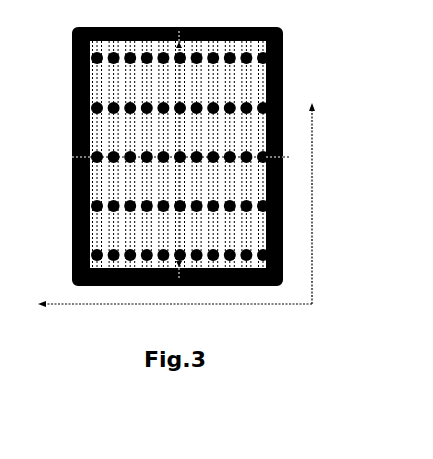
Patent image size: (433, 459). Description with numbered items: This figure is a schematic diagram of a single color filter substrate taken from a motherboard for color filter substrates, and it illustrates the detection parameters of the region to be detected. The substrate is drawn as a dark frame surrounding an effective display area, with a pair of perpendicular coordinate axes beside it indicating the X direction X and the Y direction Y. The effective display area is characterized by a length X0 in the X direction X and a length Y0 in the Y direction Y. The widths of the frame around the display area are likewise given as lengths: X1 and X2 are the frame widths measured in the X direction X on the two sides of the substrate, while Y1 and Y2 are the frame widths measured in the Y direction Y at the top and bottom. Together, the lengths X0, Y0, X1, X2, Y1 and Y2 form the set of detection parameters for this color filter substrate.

The length in Y direction of the effective display area Y0 is at (186, 155).
The frame width in Y direction Y1 is at (191, 33).
The frame width in Y direction Y2 is at (194, 280).
The length in X direction of the effective display area X0 is at (193, 158).
The frame width in X direction X1 is at (169, 163).
The frame width in X direction X2 is at (278, 163).
The X direction X is at (175, 297).
The Y direction Y is at (301, 203).